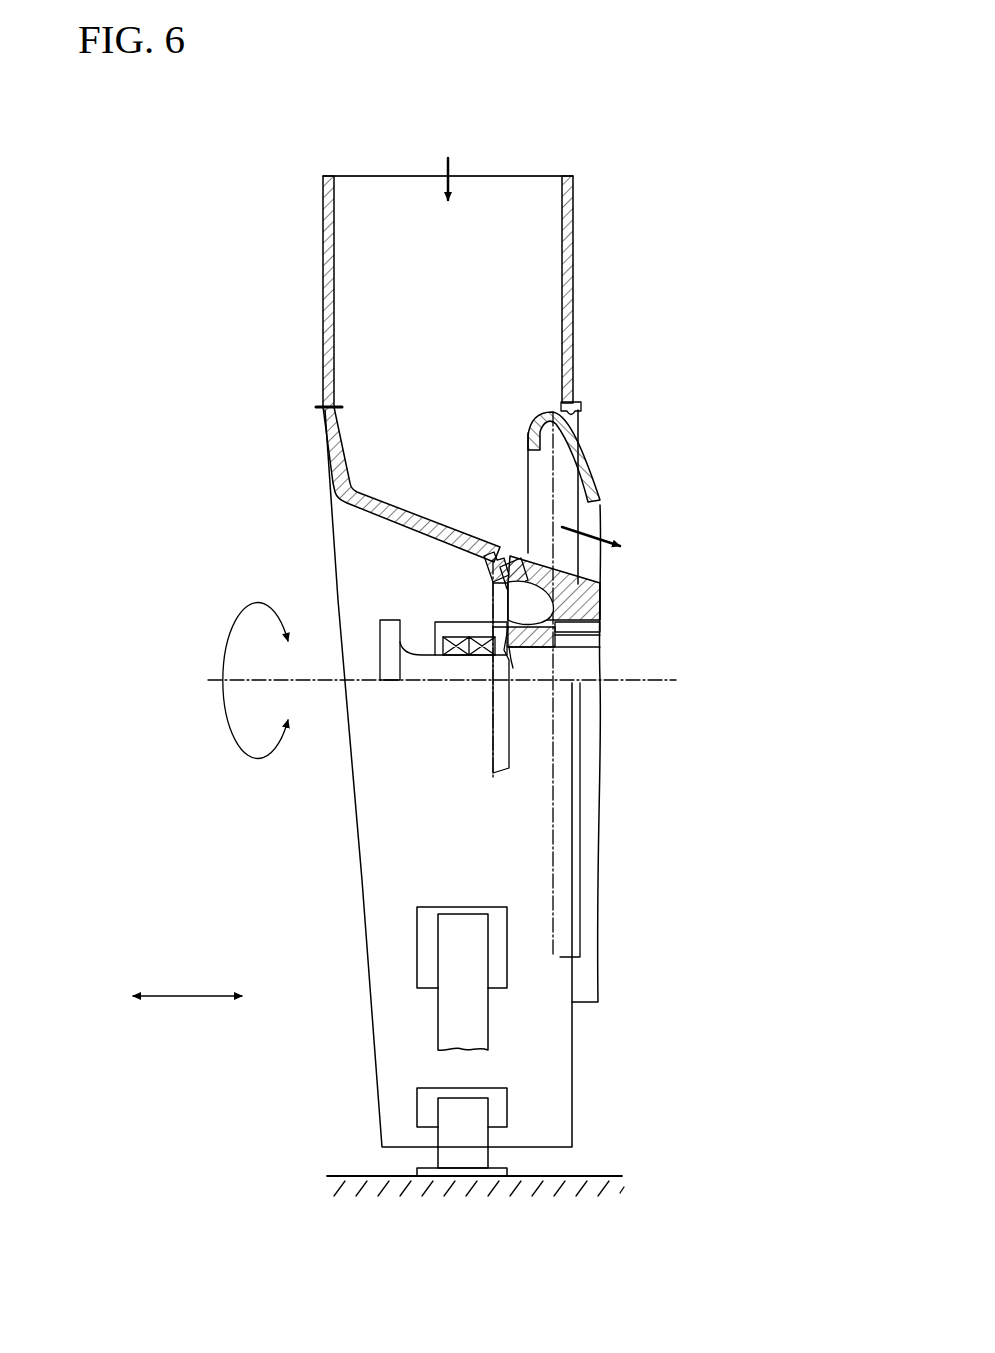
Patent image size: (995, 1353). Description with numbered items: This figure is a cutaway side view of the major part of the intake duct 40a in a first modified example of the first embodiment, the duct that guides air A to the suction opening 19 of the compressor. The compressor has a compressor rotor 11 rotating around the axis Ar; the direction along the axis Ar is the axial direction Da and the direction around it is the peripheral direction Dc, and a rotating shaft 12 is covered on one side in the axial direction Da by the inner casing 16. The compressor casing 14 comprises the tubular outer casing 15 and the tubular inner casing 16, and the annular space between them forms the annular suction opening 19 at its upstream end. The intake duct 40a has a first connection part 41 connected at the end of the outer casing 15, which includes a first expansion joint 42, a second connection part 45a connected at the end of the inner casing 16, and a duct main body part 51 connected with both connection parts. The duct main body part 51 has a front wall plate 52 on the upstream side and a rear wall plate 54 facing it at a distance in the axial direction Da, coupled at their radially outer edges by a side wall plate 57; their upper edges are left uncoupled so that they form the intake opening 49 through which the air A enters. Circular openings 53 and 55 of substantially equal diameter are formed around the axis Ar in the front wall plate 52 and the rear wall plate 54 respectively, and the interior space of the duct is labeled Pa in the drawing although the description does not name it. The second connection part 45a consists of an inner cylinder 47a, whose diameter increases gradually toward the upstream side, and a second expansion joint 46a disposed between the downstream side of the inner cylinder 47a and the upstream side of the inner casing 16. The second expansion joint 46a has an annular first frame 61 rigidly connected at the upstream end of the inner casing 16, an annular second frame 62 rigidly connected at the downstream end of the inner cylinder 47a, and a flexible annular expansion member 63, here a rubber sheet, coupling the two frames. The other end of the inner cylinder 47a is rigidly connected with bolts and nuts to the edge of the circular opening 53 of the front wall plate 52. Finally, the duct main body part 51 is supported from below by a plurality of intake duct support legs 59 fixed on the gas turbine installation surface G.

The intake duct 40a is at (605, 175).
The intake opening 49 is at (525, 175).
The duct main body part 51 is at (245, 192).
The side wall plate 57 is at (367, 202).
The front wall plate 52 is at (326, 247).
The rear wall plate 54 is at (563, 290).
The circular opening 53 is at (336, 416).
The sheet passage Pa is at (420, 360).
The second connection part 45a is at (245, 432).
The inner cylinder 47a is at (337, 483).
The second expansion joint 46a is at (490, 577).
The compressor rotor 11 is at (436, 778).
The rotating shaft 12 is at (433, 670).
The suction opening 19 is at (527, 477).
The circular opening 55 is at (560, 403).
The first connection part 41 is at (614, 430).
The first expansion joint 42 is at (583, 407).
The compressor casing 14 is at (722, 452).
The outer casing 15 is at (600, 485).
The inner casing 16 is at (600, 596).
The first frame 61 is at (600, 615).
The expansion member 63 is at (597, 640).
The second frame 62 is at (500, 555).
The intake duct support legs 59 is at (478, 1145).
The peripheral direction Dc is at (222, 712).
The air A is at (450, 170).
The axis Ar is at (660, 683).
The axial direction Da is at (190, 1000).
The gas turbine installation surface G is at (348, 1177).